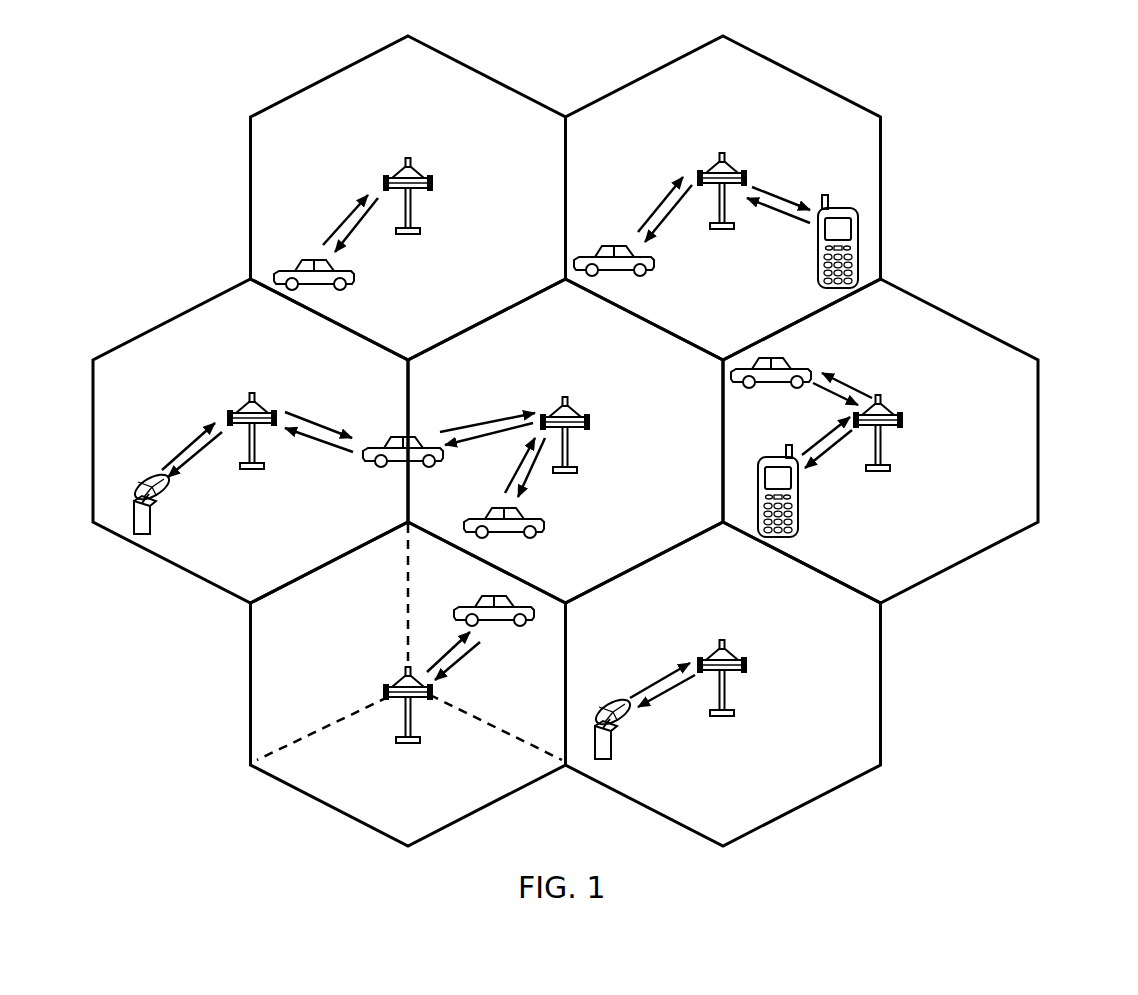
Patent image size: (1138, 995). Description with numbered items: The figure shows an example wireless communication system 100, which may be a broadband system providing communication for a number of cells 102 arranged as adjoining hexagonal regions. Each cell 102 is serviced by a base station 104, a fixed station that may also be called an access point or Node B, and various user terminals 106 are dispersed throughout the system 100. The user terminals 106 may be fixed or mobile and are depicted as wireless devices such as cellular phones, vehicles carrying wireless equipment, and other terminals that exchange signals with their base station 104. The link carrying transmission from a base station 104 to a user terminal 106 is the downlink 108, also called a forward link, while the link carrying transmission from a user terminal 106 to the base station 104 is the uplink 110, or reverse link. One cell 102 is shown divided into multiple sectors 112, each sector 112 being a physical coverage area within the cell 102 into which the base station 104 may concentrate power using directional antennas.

The wireless communication system 100 is at (1026, 121).
The cell 102 is at (340, 70).
The base station 104 is at (408, 158).
The user terminal 106 is at (355, 282).
The downlink 108 is at (350, 235).
The uplink 110 is at (342, 215).
The sector 112 is at (465, 803).